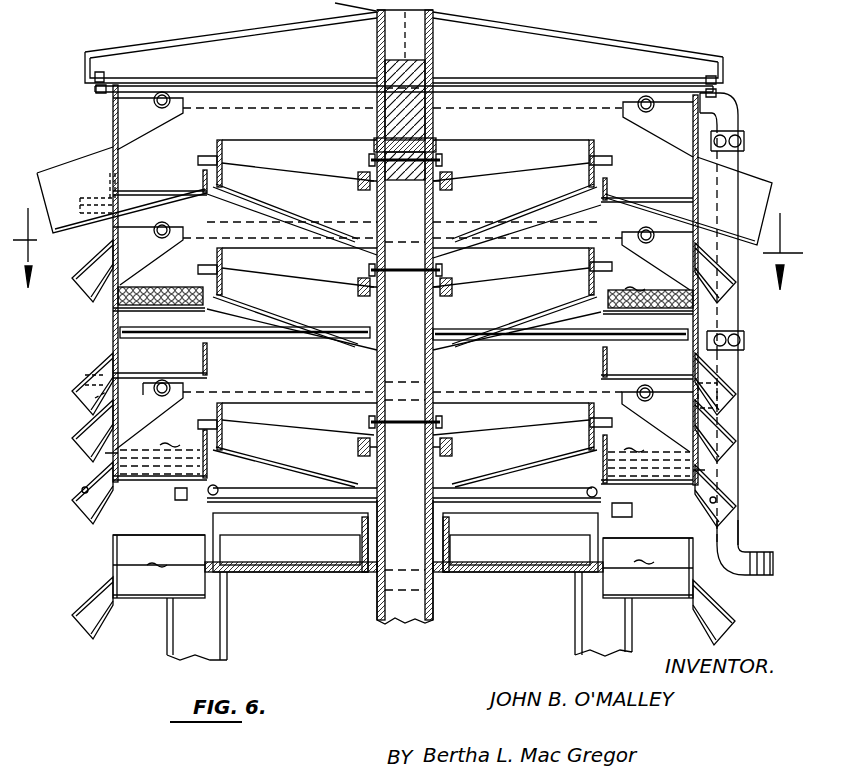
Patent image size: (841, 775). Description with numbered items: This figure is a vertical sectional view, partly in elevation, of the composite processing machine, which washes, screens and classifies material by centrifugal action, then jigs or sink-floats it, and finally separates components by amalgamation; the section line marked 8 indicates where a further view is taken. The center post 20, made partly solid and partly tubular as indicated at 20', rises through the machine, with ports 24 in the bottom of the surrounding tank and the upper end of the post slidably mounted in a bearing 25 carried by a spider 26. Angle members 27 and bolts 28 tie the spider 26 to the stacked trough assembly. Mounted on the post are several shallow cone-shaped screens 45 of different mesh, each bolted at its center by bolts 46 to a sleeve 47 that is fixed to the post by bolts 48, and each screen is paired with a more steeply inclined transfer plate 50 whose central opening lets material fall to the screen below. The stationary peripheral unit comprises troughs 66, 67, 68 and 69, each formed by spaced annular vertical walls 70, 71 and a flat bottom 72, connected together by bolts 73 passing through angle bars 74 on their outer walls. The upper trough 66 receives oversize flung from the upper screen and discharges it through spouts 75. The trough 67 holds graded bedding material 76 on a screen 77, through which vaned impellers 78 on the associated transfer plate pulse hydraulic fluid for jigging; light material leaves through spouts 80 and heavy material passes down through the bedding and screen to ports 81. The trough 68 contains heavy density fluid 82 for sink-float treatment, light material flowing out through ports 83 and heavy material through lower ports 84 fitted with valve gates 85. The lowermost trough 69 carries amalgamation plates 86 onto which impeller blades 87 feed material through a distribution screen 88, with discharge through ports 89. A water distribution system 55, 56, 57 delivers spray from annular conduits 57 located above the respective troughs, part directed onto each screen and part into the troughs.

The section line 8- 8 is at (408, 249).
The center post 20 is at (377, 120).
The tubular portion of center post 20' is at (423, 562).
The ports 24 is at (340, 5).
The bearing 25 is at (432, 40).
The spider 26 is at (612, 40).
The angle members 27 is at (95, 77).
The bolts 28 is at (716, 82).
The screens 45 is at (490, 440).
The bolts 46 is at (440, 452).
The sleeve 47 is at (440, 145).
The bolts 48 is at (408, 430).
The transfer plates 50 is at (520, 480).
The water distribution system 55 is at (738, 368).
The water distribution system 56 is at (720, 400).
The annular conduits 57 is at (258, 492).
The upper trough 66 is at (648, 136).
The annular trough 67 is at (165, 275).
The trough 68 is at (404, 429).
The lowermost annular trough 69 is at (403, 551).
The annular vertical wall 70 is at (742, 118).
The annular vertical wall 71 is at (603, 445).
The flat bottom 72 is at (680, 485).
The bolts 73 is at (95, 372).
The angle bars 74 is at (95, 400).
The spouts 75 is at (752, 180).
The bedding material 76 is at (612, 305).
The screen 77 is at (655, 312).
The vaned impellers 78 is at (215, 332).
The spouts 80 is at (730, 280).
The ports 81 is at (725, 395).
The heavy density fluid 82 is at (705, 470).
The ports 83 is at (735, 440).
The lower ports 84 is at (716, 500).
The valve gates 85 is at (730, 518).
The amalgamation plates 86 is at (645, 568).
The impeller blades 87 is at (528, 555).
The distribution screen 88 is at (675, 575).
The ports 89 is at (733, 622).